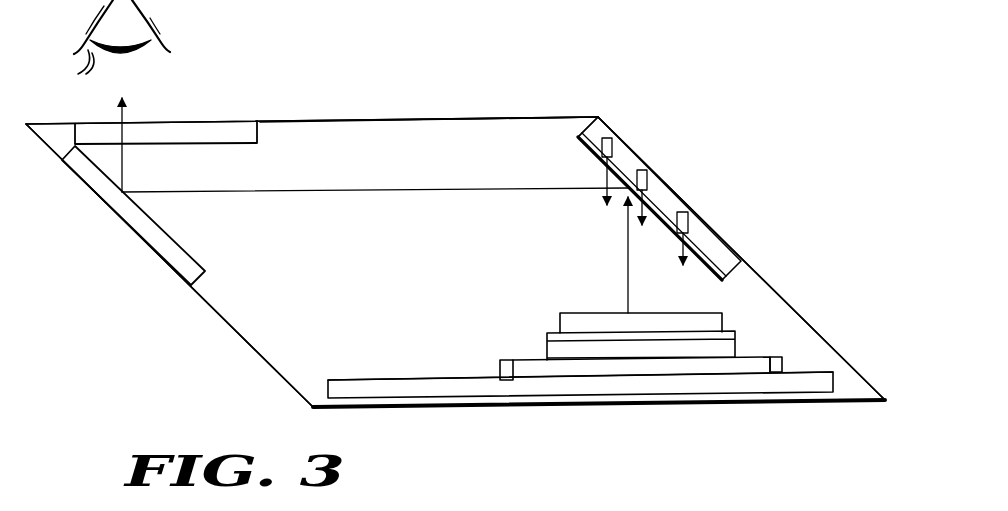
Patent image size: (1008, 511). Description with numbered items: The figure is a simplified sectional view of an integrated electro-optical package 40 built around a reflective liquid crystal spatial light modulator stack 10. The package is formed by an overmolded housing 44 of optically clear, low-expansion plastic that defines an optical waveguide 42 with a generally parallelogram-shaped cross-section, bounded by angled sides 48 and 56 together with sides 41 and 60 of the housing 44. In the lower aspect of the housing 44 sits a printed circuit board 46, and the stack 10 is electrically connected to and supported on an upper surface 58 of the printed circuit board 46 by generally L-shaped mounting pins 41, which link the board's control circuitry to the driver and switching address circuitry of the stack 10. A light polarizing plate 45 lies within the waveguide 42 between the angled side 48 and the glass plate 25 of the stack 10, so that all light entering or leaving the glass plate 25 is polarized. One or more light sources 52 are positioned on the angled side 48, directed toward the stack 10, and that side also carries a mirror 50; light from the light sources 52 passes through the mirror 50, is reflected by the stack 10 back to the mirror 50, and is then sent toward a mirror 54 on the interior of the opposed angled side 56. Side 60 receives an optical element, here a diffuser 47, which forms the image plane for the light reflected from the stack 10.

The reflective LCSLM stack 10 is at (545, 338).
The glass plate 25 is at (583, 313).
The integrated electro-optical package 40 is at (134, 432).
The L-shaped mounting pins 41 is at (776, 357).
The optical waveguide 42 is at (437, 272).
The overmolded housing 44 is at (306, 121).
The light polarizing plate 45 is at (578, 140).
The printed circuit board 46 is at (353, 380).
The diffuser 47 is at (222, 146).
The angled side 48 is at (767, 279).
The mirror 50 is at (736, 266).
The light sources 52 is at (613, 145).
The mirror 54 is at (177, 240).
The opposed angled side 56 is at (234, 330).
The upper surface 58 is at (421, 380).
The side 60 is at (389, 118).